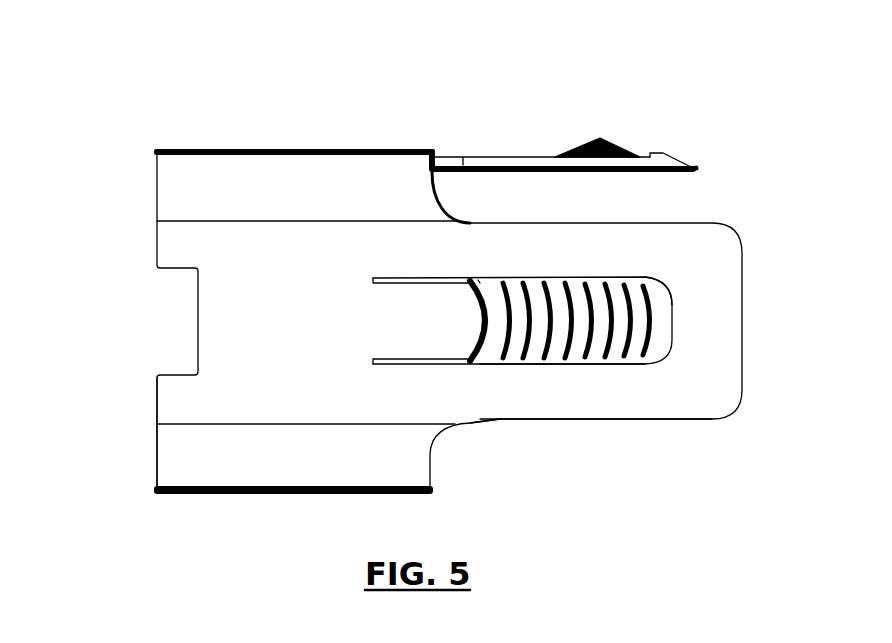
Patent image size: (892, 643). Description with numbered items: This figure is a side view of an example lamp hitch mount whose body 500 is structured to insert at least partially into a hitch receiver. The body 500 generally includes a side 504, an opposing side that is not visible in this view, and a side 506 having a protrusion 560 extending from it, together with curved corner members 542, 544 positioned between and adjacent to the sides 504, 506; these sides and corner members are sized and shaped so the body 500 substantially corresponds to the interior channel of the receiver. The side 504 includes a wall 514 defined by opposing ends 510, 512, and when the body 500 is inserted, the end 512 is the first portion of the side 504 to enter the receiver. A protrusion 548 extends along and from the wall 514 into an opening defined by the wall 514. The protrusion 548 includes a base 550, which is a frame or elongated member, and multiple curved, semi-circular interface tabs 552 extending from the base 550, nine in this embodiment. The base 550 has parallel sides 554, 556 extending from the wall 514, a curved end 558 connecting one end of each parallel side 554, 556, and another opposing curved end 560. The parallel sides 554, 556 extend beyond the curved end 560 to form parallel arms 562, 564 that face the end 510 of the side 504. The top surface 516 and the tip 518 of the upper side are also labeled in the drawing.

The body 500 is at (160, 67).
The side 504 is at (508, 439).
The side 506 is at (391, 127).
The end 510 is at (154, 392).
The end 512 is at (744, 292).
The wall 514 is at (292, 361).
The top surface 516 is at (157, 152).
The tip 518 is at (694, 166).
The curved corner member 542 is at (182, 190).
The curved corner member 544 is at (268, 455).
The protrusion 548 is at (571, 389).
The base 550 is at (618, 271).
The curved interface tabs 552 is at (507, 283).
The parallel side 554 is at (481, 277).
The parallel side 556 is at (544, 368).
The curved end 558 is at (667, 300).
The protrusion / curved end 560 is at (603, 137).
The parallel arm 562 is at (430, 276).
The parallel arm 564 is at (427, 362).